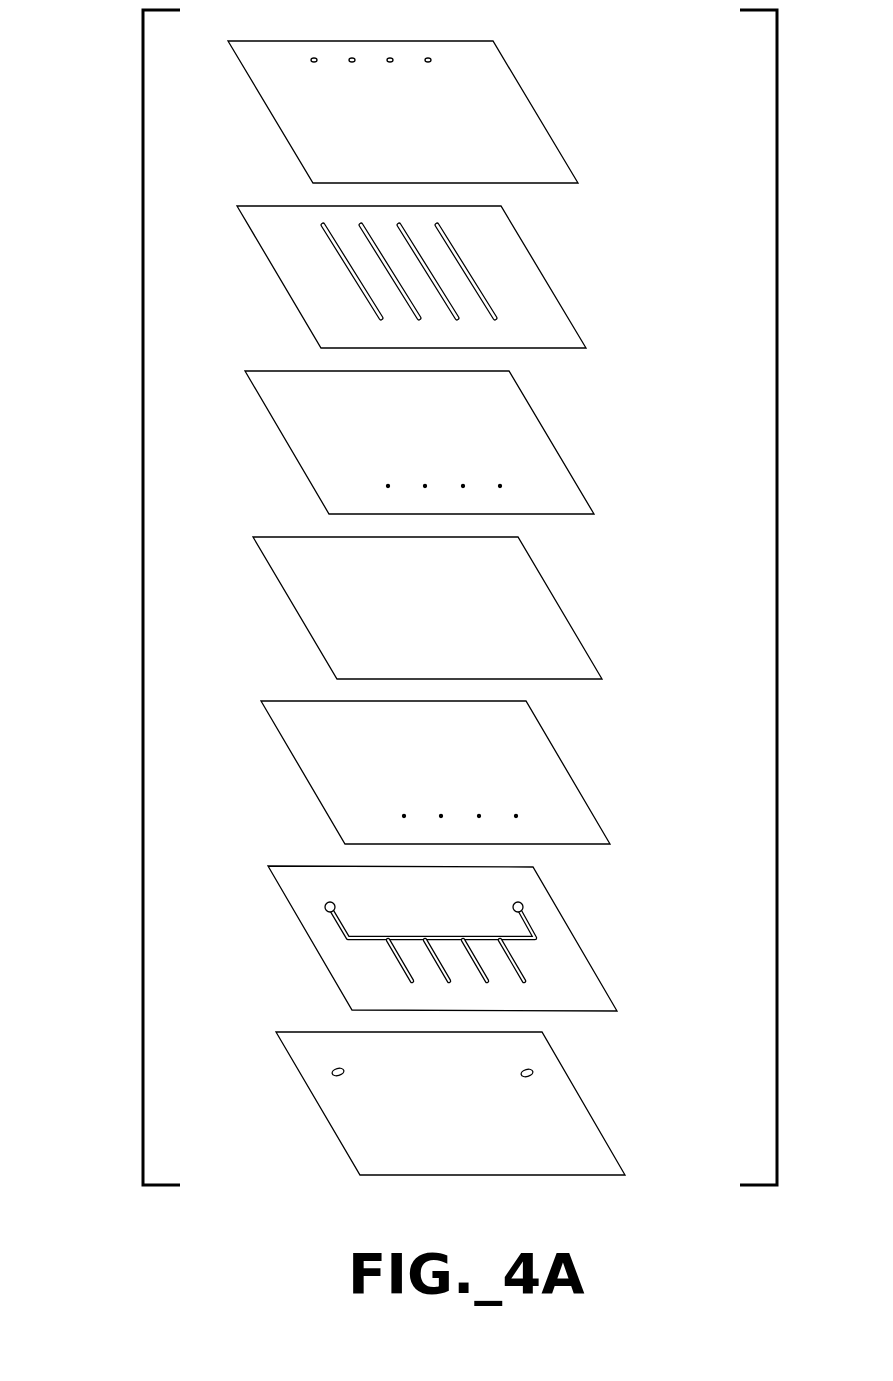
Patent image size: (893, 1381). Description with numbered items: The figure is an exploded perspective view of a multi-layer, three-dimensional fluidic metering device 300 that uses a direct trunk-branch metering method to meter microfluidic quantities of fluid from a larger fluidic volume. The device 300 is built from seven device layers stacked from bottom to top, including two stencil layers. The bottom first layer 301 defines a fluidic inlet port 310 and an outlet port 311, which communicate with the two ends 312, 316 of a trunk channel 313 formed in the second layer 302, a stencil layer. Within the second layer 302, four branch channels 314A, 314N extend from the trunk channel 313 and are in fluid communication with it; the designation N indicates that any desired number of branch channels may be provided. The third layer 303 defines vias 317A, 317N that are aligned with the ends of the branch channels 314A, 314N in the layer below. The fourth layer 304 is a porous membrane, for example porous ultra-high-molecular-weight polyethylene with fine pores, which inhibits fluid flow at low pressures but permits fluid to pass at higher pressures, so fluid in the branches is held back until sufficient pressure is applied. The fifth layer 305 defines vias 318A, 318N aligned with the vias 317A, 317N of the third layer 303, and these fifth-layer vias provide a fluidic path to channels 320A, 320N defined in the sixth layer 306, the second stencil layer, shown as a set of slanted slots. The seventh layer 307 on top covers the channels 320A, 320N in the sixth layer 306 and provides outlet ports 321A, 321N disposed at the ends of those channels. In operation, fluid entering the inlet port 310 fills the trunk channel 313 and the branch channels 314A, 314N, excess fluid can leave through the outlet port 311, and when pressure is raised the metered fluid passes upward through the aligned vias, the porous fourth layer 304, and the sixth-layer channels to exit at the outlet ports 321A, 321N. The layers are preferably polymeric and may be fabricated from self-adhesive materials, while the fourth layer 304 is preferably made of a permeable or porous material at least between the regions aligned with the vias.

The fluidic metering device 300 is at (132, 599).
The first layer 301 is at (612, 1174).
The second layer 302 is at (598, 1010).
The third layer 303 is at (592, 843).
The fourth layer 304 is at (585, 678).
The fifth layer 305 is at (580, 513).
The sixth layer 306 is at (577, 347).
The seventh layer 307 is at (570, 182).
The fluidic inlet port 310 is at (335, 1066).
The outlet port 311 is at (533, 1073).
The end of trunk channel 312 is at (325, 906).
The trunk channel 313 is at (402, 937).
The branch channel 314N is at (405, 970).
The branch channel 314A is at (520, 967).
The end of trunk channel 316 is at (523, 908).
The via 317N is at (405, 817).
The via 317A is at (515, 817).
The via 318N is at (388, 486).
The via 318A is at (500, 487).
The channel 320N is at (352, 270).
The channel 320A is at (485, 305).
The outlet port 321N is at (315, 57).
The outlet port 321A is at (429, 57).